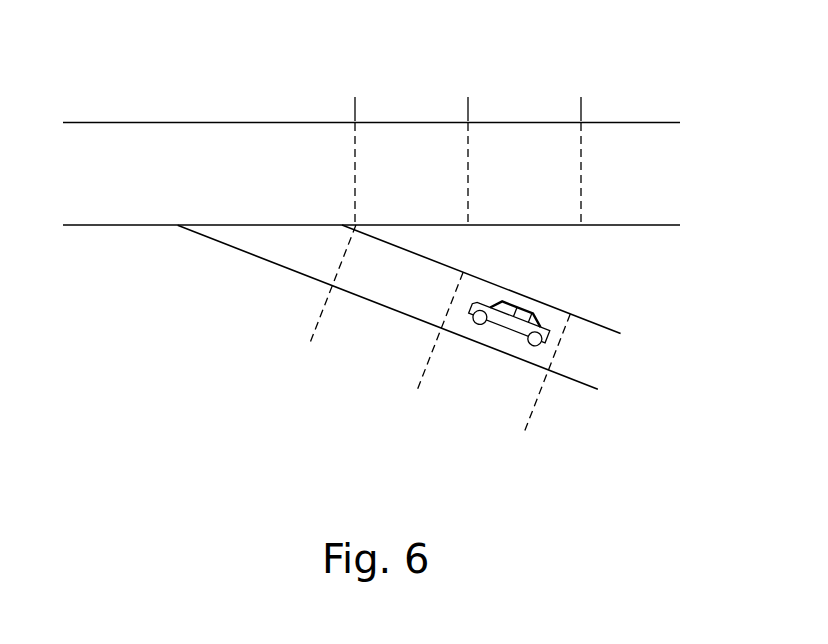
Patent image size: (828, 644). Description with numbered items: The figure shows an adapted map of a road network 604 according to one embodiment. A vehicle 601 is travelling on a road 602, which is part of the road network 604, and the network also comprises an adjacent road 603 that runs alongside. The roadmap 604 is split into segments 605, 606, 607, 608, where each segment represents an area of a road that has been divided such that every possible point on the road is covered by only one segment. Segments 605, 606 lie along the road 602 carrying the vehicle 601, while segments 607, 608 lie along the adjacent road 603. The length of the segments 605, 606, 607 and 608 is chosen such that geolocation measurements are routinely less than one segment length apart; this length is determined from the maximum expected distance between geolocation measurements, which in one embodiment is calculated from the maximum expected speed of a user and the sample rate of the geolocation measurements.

The vehicle 601 is at (488, 298).
The road 602 is at (605, 362).
The adjacent road 603 is at (650, 158).
The road network 604 is at (160, 322).
The segment 605 is at (387, 307).
The segment 606 is at (500, 372).
The segment 607 is at (355, 110).
The segment 608 is at (468, 110).